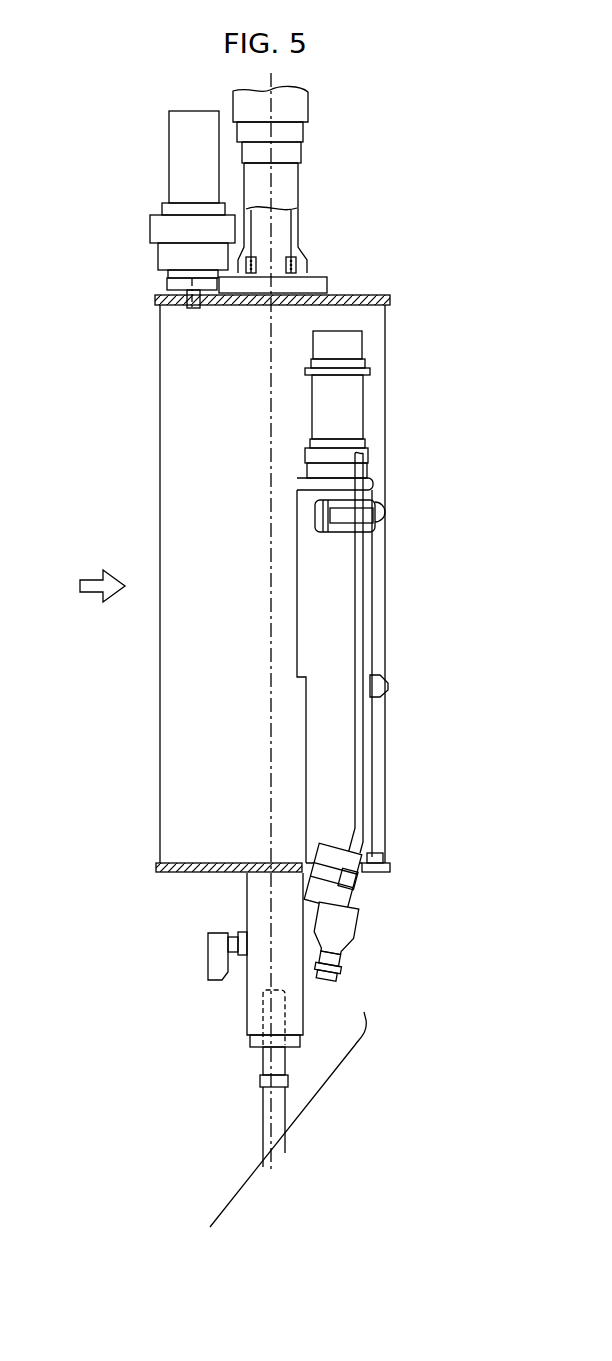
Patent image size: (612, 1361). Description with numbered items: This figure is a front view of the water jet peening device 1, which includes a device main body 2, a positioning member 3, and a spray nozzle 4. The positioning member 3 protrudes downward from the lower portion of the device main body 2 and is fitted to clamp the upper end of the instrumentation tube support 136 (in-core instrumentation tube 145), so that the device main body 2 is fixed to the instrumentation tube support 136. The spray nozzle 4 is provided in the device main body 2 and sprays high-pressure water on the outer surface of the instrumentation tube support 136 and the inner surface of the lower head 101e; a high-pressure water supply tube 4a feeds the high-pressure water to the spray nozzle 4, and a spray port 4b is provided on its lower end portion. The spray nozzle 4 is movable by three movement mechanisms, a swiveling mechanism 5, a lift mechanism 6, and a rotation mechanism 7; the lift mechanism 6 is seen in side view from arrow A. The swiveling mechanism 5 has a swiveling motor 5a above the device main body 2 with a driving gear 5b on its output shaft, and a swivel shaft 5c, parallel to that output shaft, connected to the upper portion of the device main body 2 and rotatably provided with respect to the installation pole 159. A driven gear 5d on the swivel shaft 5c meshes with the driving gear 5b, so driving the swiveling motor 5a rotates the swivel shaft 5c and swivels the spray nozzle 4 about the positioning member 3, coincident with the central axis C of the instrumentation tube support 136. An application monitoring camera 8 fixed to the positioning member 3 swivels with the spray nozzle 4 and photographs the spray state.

The water jet peening device 1 is at (406, 255).
The device main body 2 is at (160, 388).
The positioning member 3 is at (247, 1008).
The spray nozzle 4 is at (348, 970).
The high-pressure water supply tube 4a is at (358, 583).
The spray port 4b is at (328, 980).
The swiveling mechanism 5 is at (308, 205).
The swiveling motor 5a is at (169, 156).
The driving gear 5b is at (170, 283).
The swivel shaft 5c is at (282, 226).
The driven gear 5d is at (316, 279).
The lift mechanism 6 is at (372, 407).
The rotation mechanism 7 is at (362, 882).
The application monitoring camera 8 is at (208, 945).
The lower head 101e is at (305, 1105).
The instrumentation tube support 136 is at (238, 1107).
The in-core instrumentation tube 145 is at (263, 1118).
The installation pole 159 is at (309, 101).
The arrow A is at (91, 586).
The central axis C is at (272, 1062).